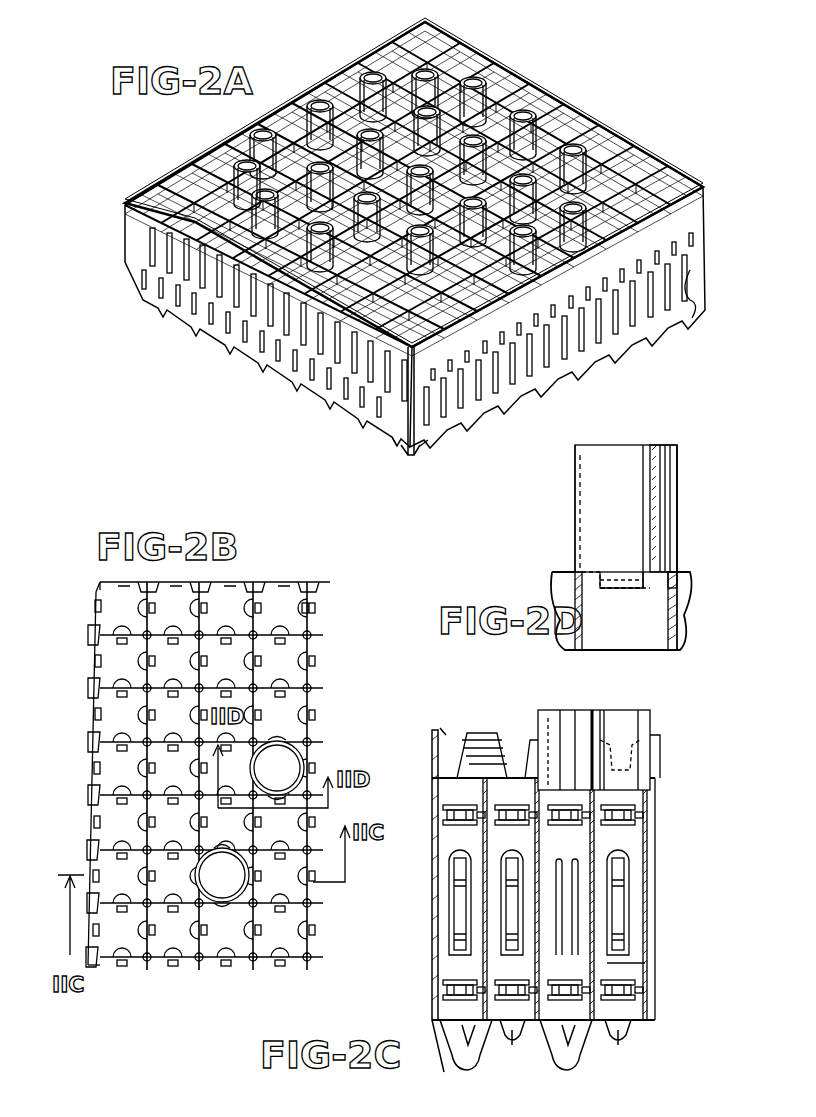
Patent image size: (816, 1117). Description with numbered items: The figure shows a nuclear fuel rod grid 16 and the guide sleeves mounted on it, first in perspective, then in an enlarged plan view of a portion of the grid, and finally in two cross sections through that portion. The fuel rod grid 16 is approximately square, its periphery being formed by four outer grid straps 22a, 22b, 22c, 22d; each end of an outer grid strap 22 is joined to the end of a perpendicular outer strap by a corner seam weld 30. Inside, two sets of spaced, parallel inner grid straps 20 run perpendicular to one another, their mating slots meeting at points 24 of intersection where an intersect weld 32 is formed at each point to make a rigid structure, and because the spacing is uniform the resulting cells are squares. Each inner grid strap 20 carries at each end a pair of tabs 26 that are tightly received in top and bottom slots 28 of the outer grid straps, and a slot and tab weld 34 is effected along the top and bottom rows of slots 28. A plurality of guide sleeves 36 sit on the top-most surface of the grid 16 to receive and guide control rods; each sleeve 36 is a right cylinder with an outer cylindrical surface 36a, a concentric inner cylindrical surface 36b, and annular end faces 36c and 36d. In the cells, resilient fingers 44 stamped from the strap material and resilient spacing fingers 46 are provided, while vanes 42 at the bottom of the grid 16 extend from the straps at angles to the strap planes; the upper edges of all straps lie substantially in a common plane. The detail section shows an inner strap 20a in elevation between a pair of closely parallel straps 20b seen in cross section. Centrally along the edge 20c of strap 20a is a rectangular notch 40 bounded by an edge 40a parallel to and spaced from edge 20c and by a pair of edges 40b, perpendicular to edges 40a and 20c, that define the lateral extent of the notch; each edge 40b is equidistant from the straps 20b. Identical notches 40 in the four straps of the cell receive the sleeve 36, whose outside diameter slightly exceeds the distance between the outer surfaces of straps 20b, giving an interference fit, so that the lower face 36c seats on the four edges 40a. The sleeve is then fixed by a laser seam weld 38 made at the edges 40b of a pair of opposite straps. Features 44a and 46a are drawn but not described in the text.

In FIG. 2A, the fuel rod grid 16 is at (606, 122).
In FIG. 2A, the inner grid straps 20 is at (640, 152).
In FIG. 2B, the inner grid straps 20 is at (100, 762).
In FIG. 2D, the inner grid straps 20 is at (621, 611).
In FIG. 2C, the inner grid straps 20 is at (656, 802).
In FIG. 2B, the inner strap 20a is at (350, 734).
In FIG. 2D, the inner strap 20a is at (686, 614).
In FIG. 2C, the inner strap 20a is at (520, 857).
In FIG. 2B, the grid straps 20b is at (305, 678).
In FIG. 2D, the grid straps 20b is at (667, 650).
In FIG. 2D, the edge of strap 20c is at (690, 586).
In FIG. 2B, the outer grid straps 22 is at (205, 582).
In FIG. 2C, the outer grid straps 22 is at (432, 766).
In FIG. 2A, the outer grid strap 22a is at (622, 346).
In FIG. 2A, the outer grid strap 22b is at (286, 90).
In FIG. 2A, the outer grid strap 22c is at (466, 48).
In FIG. 2A, the outer grid strap 22d is at (240, 368).
In FIG. 2A, the points of intersection 24 is at (243, 182).
In FIG. 2A, the tabs 26 is at (700, 274).
In FIG. 2A, the slots 28 is at (680, 322).
In FIG. 2A, the corner seam weld 30 is at (392, 452).
In FIG. 2A, the intersect weld 32 is at (175, 212).
In FIG. 2A, the slot and tab weld 34 is at (435, 448).
In FIG. 2A, the guide sleeve 36 is at (200, 144).
In FIG. 2B, the guide sleeve 36 is at (300, 750).
In FIG. 2D, the guide sleeve 36 is at (680, 484).
In FIG. 2C, the guide sleeve 36 is at (568, 712).
In FIG. 2D, the outer cylindrical surface 36a is at (678, 515).
In FIG. 2D, the inner cylindrical surface 36b is at (658, 447).
In FIG. 2D, the annular end face 36c is at (678, 574).
In FIG. 2D, the annular end face 36d is at (578, 446).
In FIG. 2A, the seam weld 38 is at (325, 302).
In FIG. 2B, the seam weld 38 is at (285, 744).
In FIG. 2A, the notch 40 is at (528, 96).
In FIG. 2C, the notch 40 is at (528, 762).
In FIG. 2D, the notch edge 40a is at (622, 592).
In FIG. 2D, the notch edges 40b is at (612, 586).
In FIG. 2C, the vanes 42 is at (575, 1048).
In FIG. 2B, the resilient fingers 44 is at (280, 607).
In FIG. 2C, the resilient fingers 44 is at (652, 908).
In FIG. 2C, the slot bridge 44a is at (640, 957).
In FIG. 2B, the resilient spacing fingers 46 is at (325, 608).
In FIG. 2C, the resilient spacing fingers 46 is at (448, 994).
In FIG. 2C, the connector tab 46a is at (640, 818).